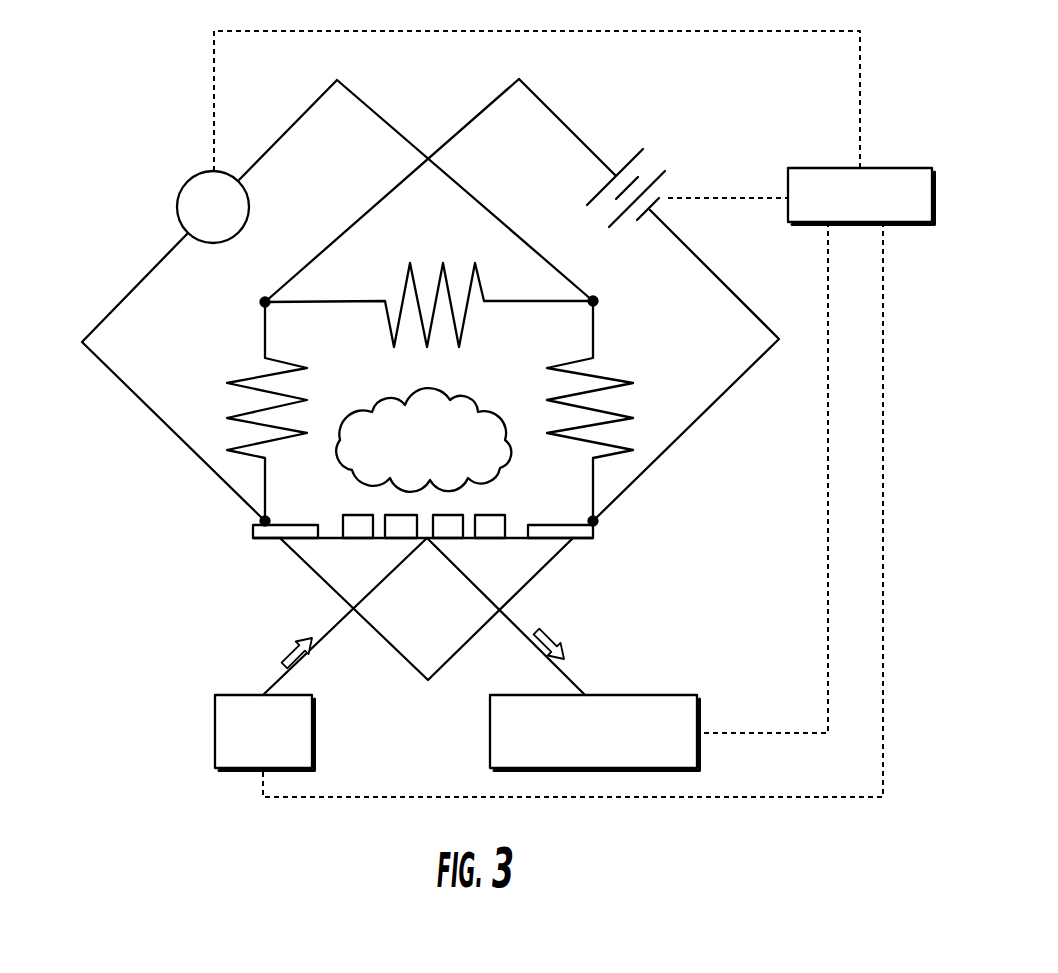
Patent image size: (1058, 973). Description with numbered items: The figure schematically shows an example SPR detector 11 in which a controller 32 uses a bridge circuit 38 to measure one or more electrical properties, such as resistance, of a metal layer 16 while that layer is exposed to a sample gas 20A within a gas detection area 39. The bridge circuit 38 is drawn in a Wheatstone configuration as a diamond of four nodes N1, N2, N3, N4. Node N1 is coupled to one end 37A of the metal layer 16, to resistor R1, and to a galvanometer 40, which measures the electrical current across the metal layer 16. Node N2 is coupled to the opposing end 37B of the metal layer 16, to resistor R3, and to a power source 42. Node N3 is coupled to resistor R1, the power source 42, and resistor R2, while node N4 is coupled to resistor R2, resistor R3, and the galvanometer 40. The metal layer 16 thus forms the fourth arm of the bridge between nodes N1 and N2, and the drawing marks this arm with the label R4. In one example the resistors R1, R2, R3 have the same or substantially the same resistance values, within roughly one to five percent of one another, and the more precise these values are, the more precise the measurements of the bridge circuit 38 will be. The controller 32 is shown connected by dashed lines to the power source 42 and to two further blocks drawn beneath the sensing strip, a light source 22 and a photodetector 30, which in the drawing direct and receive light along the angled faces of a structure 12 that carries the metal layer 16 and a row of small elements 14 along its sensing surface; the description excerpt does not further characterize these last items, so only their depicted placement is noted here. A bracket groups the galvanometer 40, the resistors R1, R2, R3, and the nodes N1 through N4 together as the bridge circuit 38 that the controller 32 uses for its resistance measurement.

The SPR detector 11 is at (733, 157).
The substrate 12 is at (424, 646).
The sensing element 14 is at (355, 538).
The metal layer 16 is at (277, 540).
The sample gas 20A is at (480, 406).
The light source 22 is at (250, 695).
The photodetector 30 is at (628, 695).
The controller 32 is at (897, 168).
The end of metal layer 37A is at (251, 527).
The opposing end of metal layer 37B is at (597, 528).
The bridge circuit 38 is at (63, 84).
The gas detection area 39 is at (367, 383).
The galvanometer 40 is at (213, 172).
The power source 42 is at (628, 167).
The node N1 is at (262, 519).
The node N2 is at (597, 519).
The node N3 is at (263, 300).
The node N4 is at (596, 300).
The resistor R1 is at (240, 411).
The resistor R2 is at (429, 281).
The resistor R3 is at (605, 411).
The fourth resistor (sensing element) R4 is at (560, 513).